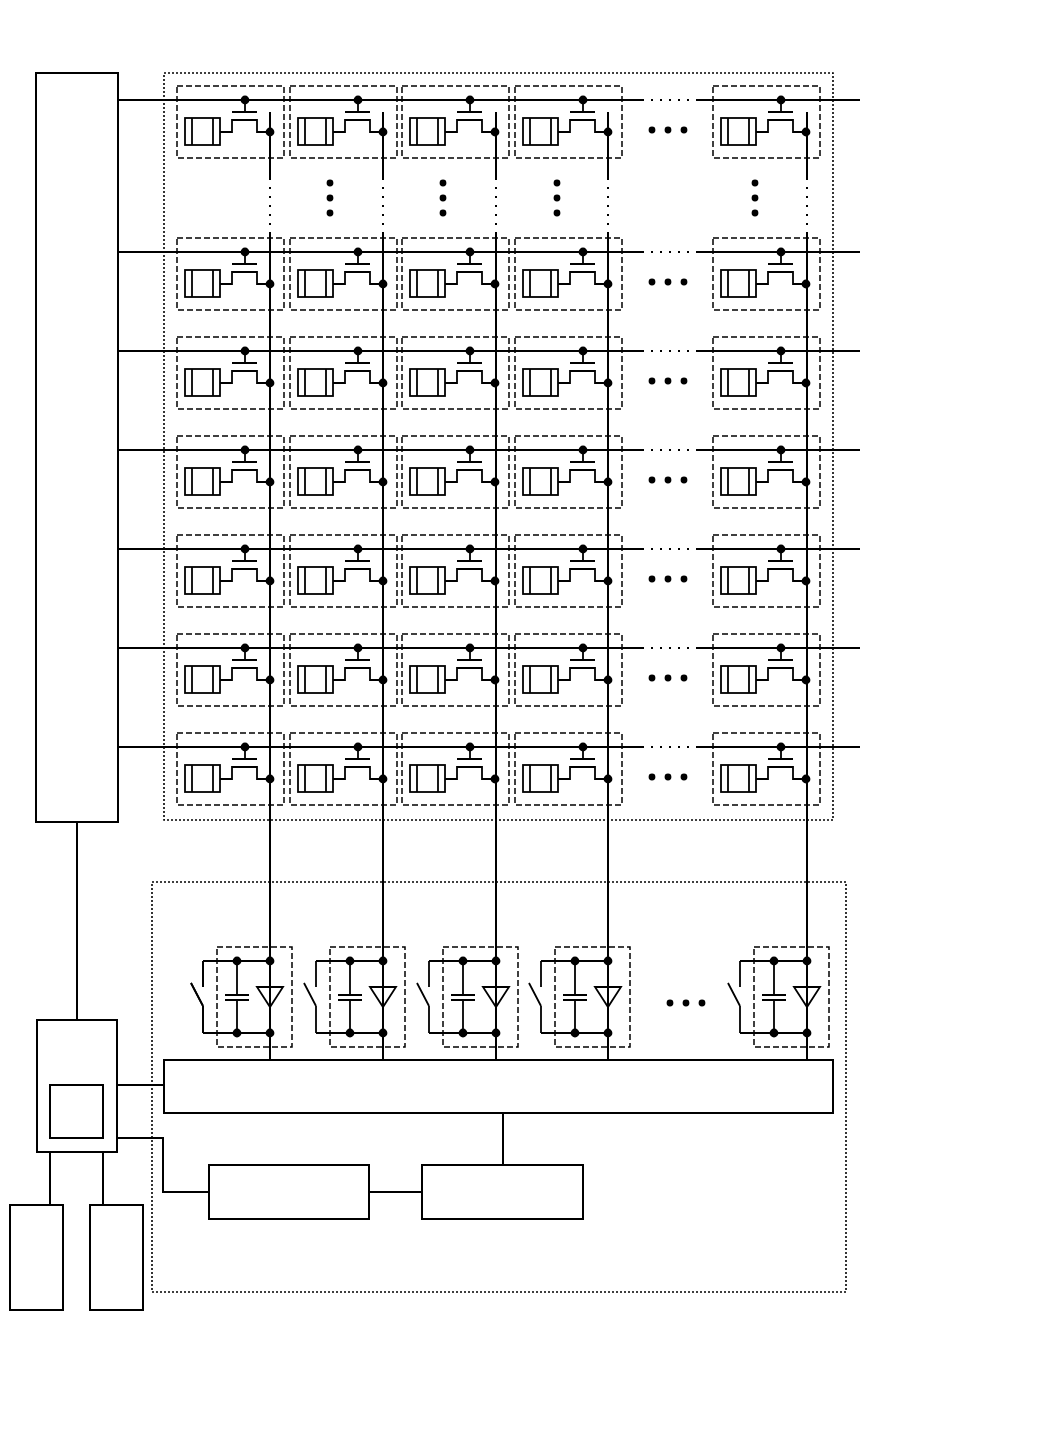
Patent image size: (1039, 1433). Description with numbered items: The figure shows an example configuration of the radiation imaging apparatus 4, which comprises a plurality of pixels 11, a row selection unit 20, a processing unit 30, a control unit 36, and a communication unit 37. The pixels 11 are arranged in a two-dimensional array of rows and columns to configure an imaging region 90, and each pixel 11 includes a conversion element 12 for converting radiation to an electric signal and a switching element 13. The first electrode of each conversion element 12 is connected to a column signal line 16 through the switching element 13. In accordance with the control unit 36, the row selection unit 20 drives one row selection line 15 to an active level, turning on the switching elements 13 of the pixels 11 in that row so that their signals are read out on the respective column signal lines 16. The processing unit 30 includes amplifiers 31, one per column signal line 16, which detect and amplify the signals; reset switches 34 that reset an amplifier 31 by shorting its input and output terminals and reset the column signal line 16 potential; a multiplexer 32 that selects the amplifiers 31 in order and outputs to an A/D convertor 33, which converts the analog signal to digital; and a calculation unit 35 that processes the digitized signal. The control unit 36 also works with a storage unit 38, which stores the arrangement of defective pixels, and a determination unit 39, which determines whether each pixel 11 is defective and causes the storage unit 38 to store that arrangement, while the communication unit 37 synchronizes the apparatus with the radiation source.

The radiation imaging apparatus 4 is at (459, 58).
The pixel 11 is at (230, 118).
The conversion element 12 is at (203, 146).
The switching element 13 is at (248, 134).
The row selection line 15 is at (147, 100).
The column signal line 16 is at (268, 848).
The row selection unit 20 is at (77, 73).
The processing unit 30 is at (848, 940).
The amplifier 31 is at (237, 947).
The multiplexer 32 is at (640, 1115).
The A/D convertor 33 is at (505, 1222).
The reset switch 34 is at (190, 975).
The calculation unit 35 is at (293, 1222).
The control unit 36 is at (50, 1020).
The communication unit 37 is at (40, 1312).
The storage unit 38 is at (115, 1312).
The determination unit 39 is at (72, 1085).
The imaging region 90 is at (800, 73).